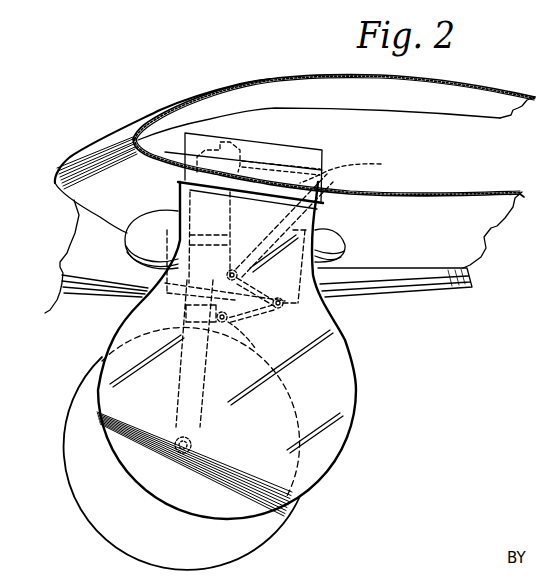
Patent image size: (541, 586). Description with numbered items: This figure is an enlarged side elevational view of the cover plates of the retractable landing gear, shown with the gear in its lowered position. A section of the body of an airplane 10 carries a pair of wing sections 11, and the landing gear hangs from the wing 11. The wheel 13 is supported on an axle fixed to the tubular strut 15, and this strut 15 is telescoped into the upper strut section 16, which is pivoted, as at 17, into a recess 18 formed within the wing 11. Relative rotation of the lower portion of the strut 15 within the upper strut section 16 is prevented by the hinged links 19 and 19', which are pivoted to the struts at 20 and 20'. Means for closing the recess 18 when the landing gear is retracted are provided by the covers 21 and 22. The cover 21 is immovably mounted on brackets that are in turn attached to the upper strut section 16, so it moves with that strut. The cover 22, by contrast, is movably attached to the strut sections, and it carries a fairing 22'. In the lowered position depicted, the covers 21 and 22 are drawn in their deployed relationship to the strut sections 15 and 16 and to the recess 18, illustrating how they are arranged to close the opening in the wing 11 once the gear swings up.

The section of airplane body 10 is at (73, 293).
The wing section 11 is at (181, 101).
The wheel 13 is at (278, 532).
The tubular strut 15 is at (186, 299).
The upper strut section 16 is at (220, 143).
The pivot 17 is at (352, 169).
The recess 18 is at (338, 243).
The hinged link 19 is at (272, 269).
The hinged link 19' is at (254, 321).
The pivot 20 is at (280, 227).
The pivot 20' is at (255, 337).
The cover 21 is at (324, 156).
The cover 22 is at (253, 350).
The fairing 22' is at (182, 463).